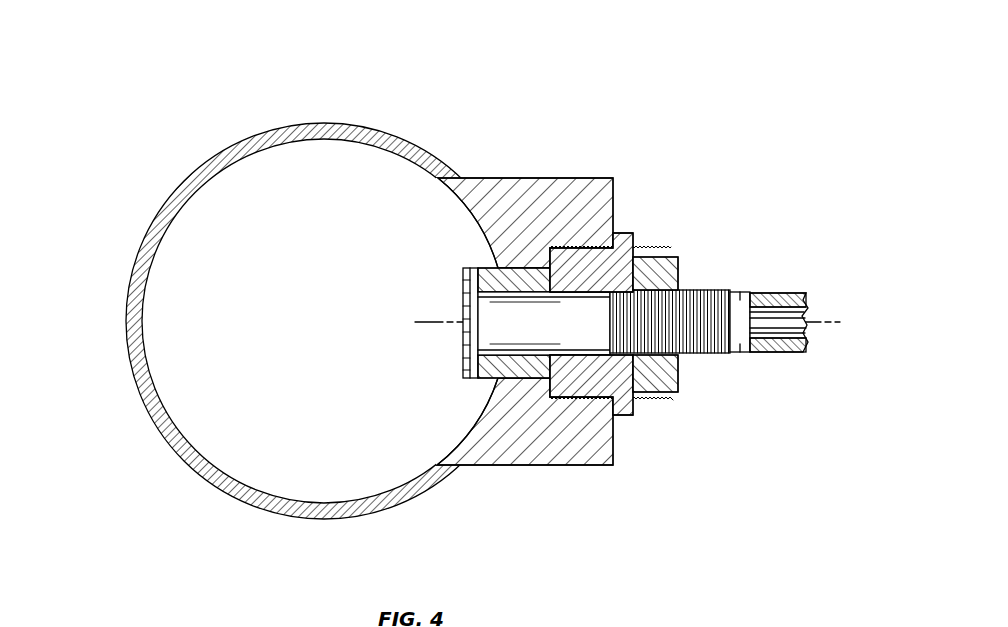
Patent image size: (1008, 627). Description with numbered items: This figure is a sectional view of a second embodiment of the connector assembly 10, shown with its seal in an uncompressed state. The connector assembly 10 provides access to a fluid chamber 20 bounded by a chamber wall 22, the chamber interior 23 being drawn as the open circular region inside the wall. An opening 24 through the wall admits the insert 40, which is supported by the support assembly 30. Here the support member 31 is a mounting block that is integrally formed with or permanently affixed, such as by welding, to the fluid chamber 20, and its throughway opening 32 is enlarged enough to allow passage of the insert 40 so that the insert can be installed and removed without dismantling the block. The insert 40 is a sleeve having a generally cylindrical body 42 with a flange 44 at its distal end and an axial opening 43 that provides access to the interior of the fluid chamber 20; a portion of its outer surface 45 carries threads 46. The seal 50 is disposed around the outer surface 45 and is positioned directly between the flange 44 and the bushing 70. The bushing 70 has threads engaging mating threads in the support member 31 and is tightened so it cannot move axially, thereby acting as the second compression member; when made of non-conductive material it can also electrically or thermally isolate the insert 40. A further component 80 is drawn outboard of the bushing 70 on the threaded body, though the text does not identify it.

The connector assembly 10 is at (635, 324).
The fluid chamber 20 is at (276, 348).
The chamber wall 22 is at (163, 214).
The ring opening 23 is at (218, 322).
The opening 24 is at (614, 466).
The support assembly 30 is at (575, 239).
The support member 31 is at (617, 188).
The throughway opening 32 is at (548, 262).
The insert 40 is at (617, 333).
The body 42 is at (722, 356).
The axial opening 43 is at (782, 313).
The flange 44 is at (463, 284).
The outer surface 45 is at (616, 412).
The threads 46 is at (700, 357).
The seal 50 is at (483, 266).
The bushing 70 is at (634, 240).
The lock nut 80 is at (679, 262).